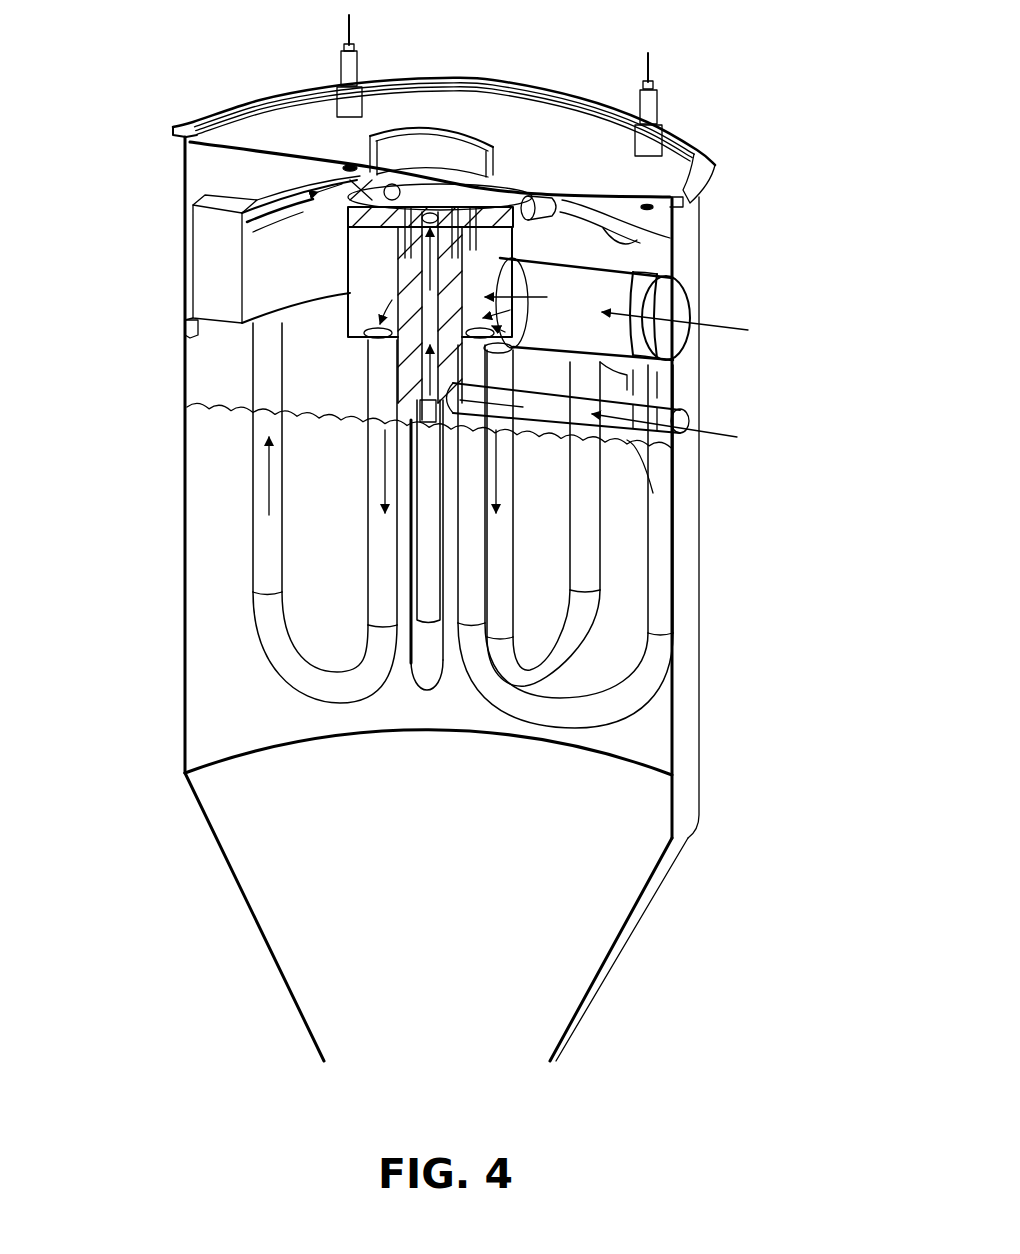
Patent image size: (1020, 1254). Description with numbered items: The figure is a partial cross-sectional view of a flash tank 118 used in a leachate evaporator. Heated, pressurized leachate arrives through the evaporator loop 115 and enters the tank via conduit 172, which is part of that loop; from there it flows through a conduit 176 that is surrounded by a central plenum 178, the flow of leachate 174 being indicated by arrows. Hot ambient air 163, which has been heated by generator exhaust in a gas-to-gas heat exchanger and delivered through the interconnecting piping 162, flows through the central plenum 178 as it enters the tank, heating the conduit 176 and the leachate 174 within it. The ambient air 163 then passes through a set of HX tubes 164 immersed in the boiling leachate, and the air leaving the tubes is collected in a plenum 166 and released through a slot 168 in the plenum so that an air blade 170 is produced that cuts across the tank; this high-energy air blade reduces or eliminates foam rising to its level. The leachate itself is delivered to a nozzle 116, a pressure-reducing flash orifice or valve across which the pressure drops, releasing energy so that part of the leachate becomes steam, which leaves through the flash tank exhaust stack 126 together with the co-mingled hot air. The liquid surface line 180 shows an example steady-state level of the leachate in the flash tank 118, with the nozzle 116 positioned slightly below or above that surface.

The evaporator loop 115 is at (680, 415).
The nozzle 116 is at (227, 185).
The flash tank 118 is at (185, 545).
The flash tank exhaust stack 126 is at (456, 125).
The interconnecting piping 162 is at (693, 308).
The ambient air 163 is at (717, 330).
The HX tubes 164 is at (293, 683).
The plenum 166 is at (187, 330).
The slot 168 is at (247, 263).
The air blade 170 is at (313, 207).
The conduit 172 is at (653, 493).
The leachate 174 is at (417, 377).
The conduit 176 is at (405, 348).
The central plenum 178 is at (372, 168).
The liquid surface line 180 is at (223, 393).